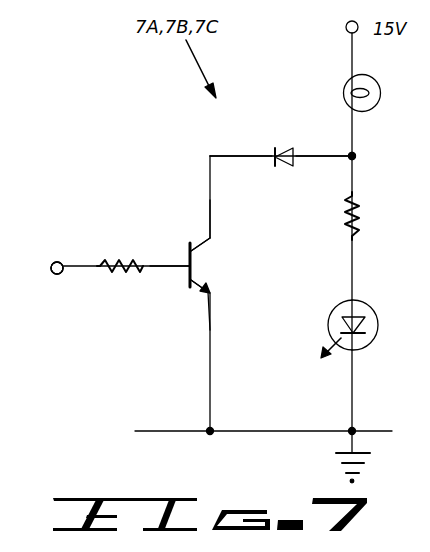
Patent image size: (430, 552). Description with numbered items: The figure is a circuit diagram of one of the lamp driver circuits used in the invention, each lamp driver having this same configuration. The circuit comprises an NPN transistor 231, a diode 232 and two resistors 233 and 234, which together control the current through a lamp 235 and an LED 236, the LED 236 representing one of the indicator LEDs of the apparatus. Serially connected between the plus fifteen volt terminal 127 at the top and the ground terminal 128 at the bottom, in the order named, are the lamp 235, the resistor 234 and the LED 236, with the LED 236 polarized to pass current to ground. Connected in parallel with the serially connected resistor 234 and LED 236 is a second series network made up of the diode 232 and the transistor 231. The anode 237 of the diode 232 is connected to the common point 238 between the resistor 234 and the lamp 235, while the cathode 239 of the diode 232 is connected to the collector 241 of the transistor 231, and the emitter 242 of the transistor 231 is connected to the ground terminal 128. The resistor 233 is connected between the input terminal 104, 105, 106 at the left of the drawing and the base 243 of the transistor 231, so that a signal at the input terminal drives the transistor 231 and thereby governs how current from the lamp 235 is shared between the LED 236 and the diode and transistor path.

The input terminal 104 is at (57, 275).
The input terminal 105 is at (60, 284).
The input terminal 106 is at (57, 275).
The +15 volt terminal 127 is at (345, 27).
The ground terminal 128 is at (338, 452).
The NPN transistor 231 is at (193, 263).
The diode 232 is at (272, 149).
The resistor 233 is at (101, 262).
The resistor 234 is at (358, 214).
The lamp 235 is at (382, 86).
The LED 236 is at (373, 306).
The anode 237 is at (306, 158).
The common point 238 is at (356, 156).
The cathode 239 is at (250, 158).
The collector 241 is at (204, 243).
The emitter 242 is at (196, 291).
The base 243 is at (168, 268).